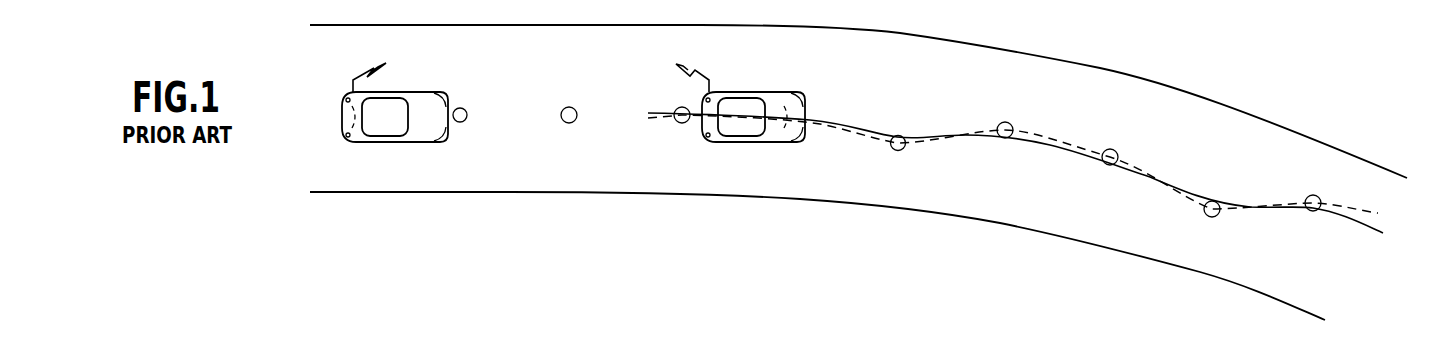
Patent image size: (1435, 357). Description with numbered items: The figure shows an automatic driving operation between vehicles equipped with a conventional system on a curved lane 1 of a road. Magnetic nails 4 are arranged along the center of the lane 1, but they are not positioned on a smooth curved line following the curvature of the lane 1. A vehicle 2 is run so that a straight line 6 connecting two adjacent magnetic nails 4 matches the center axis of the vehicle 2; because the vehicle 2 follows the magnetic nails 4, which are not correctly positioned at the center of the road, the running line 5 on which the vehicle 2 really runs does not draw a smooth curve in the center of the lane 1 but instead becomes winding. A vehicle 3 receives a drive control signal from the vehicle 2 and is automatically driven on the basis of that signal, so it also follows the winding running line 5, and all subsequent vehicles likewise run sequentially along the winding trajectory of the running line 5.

The lane 1 is at (1232, 128).
The vehicle 2 is at (745, 92).
The vehicle 3 is at (388, 92).
The magnetic nails 4 is at (1110, 149).
The running line 5 is at (870, 130).
The straight line 6 is at (872, 136).